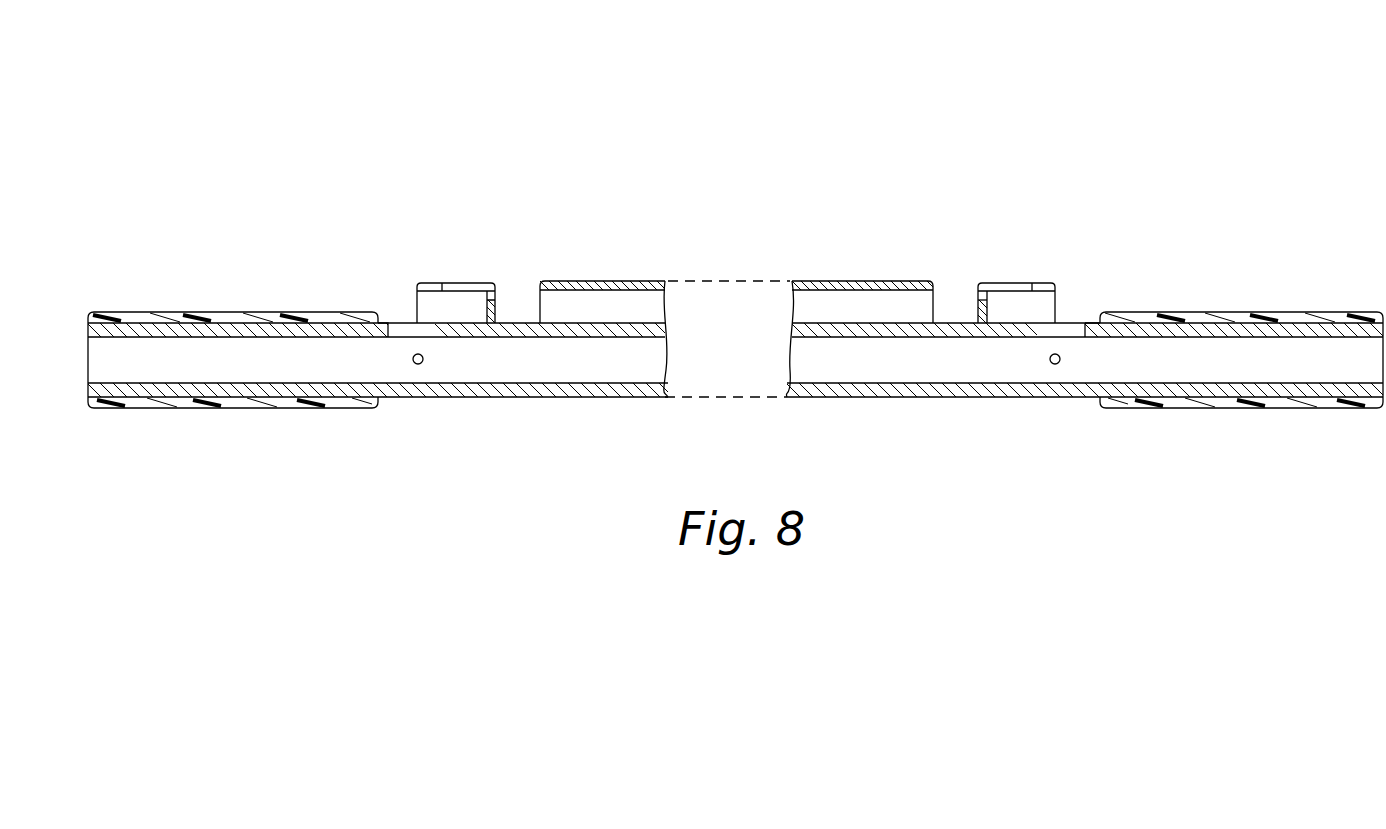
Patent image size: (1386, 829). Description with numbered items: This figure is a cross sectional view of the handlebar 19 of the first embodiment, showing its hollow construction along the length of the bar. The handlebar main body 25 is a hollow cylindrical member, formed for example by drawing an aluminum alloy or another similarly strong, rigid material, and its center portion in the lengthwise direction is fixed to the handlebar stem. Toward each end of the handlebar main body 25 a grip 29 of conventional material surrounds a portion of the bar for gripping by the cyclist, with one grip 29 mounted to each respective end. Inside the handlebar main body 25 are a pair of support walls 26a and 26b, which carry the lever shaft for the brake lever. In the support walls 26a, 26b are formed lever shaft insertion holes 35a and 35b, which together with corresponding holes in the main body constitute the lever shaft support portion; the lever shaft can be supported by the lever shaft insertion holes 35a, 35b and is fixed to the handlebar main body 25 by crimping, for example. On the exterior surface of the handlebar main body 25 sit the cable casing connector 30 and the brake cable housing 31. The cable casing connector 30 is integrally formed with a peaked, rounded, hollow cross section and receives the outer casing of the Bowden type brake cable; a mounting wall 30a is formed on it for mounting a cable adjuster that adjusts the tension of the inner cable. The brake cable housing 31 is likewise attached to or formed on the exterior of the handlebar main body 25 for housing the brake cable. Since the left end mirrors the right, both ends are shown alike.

The handlebar 19 is at (799, 104).
The handlebar main body 25 is at (937, 397).
The support wall 26a is at (208, 358).
The support wall 26b is at (1245, 318).
The grip 29 is at (275, 318).
The cable casing connector 30 is at (747, 228).
The mounting wall 30a is at (978, 313).
The brake cable housing 31 is at (566, 251).
The lever shaft insertion hole 35a is at (421, 363).
The lever shaft insertion hole 35b is at (1058, 363).